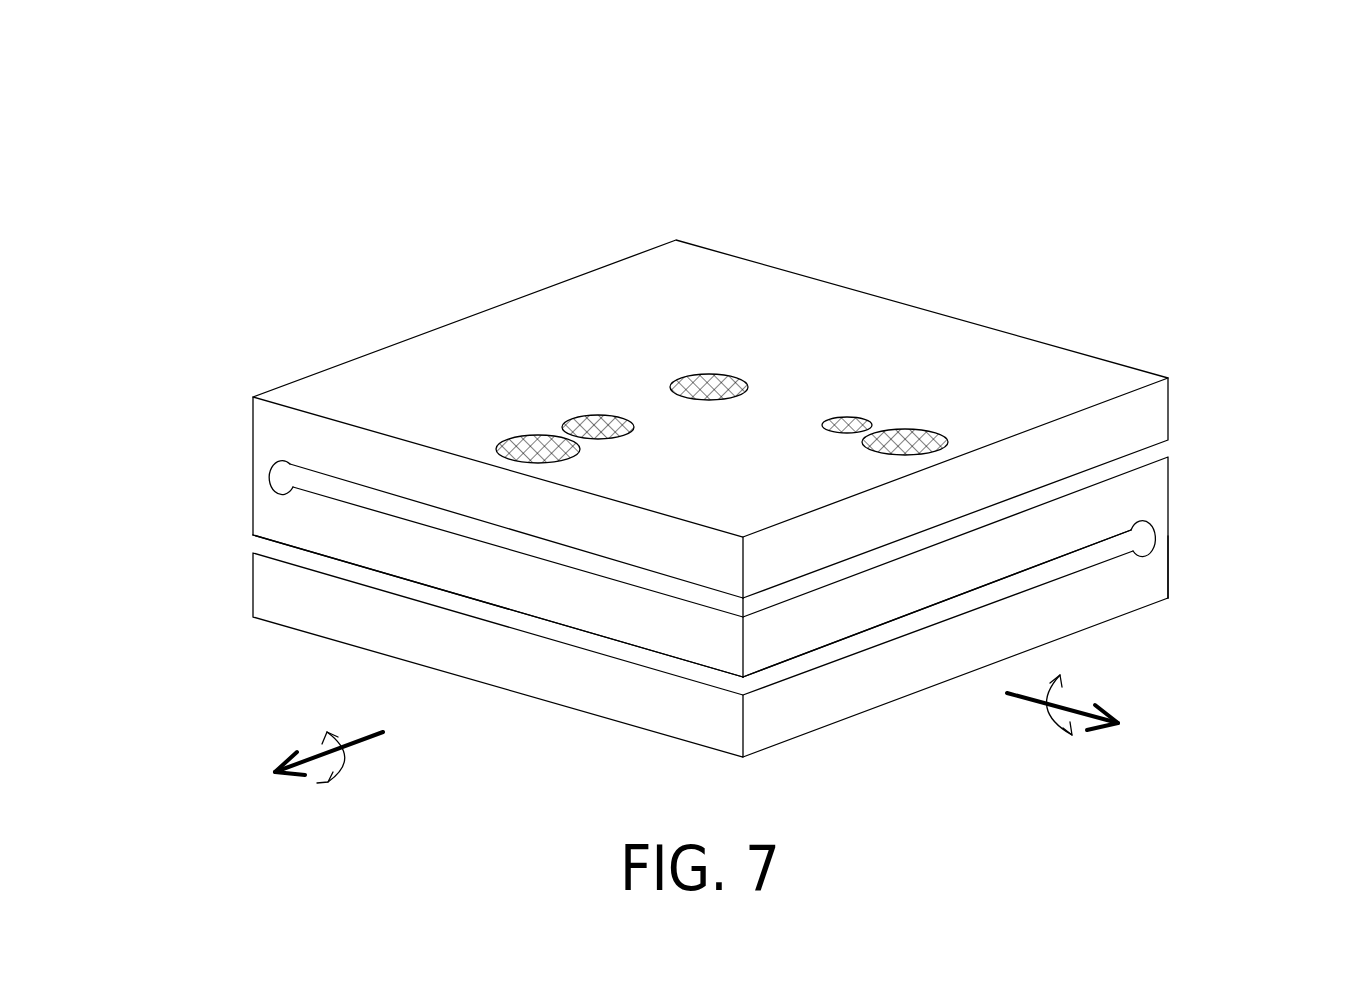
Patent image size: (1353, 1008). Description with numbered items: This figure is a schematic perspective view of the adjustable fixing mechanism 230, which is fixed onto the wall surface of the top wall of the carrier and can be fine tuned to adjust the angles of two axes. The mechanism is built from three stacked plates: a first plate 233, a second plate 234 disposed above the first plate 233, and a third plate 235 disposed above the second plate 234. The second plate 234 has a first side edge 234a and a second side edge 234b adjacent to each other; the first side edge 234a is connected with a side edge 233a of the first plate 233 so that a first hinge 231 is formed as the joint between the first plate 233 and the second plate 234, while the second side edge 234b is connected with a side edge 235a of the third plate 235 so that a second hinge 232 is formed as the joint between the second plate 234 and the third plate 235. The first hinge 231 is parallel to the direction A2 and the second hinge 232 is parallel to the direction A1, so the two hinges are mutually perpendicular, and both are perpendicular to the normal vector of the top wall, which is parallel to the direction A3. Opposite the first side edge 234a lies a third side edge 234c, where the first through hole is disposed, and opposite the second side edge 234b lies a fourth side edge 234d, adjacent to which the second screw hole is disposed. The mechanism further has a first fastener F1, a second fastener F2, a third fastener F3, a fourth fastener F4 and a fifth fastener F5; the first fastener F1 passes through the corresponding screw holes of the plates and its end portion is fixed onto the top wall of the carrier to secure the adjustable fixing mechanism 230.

The adjustable fixing mechanism 230 is at (1270, 768).
The first hinge 231 is at (1163, 533).
The second hinge 232 is at (257, 468).
The first plate 233 is at (280, 613).
The side edge of the first plate 233a is at (1168, 583).
The second plate 234 is at (285, 534).
The first side edge 234a is at (1168, 485).
The second side edge 234b is at (250, 520).
The third side edge 234c is at (487, 578).
The fourth side edge 234d is at (829, 619).
The third plate 235 is at (375, 462).
The side edge of the third plate 235a is at (252, 426).
The first fastener F1 is at (713, 380).
The second fastener F2 is at (523, 443).
The third fastener F3 is at (607, 422).
The fourth fastener F4 is at (913, 432).
The fifth fastener F5 is at (852, 418).
The direction A1 is at (677, 47).
The direction A2 is at (677, 47).
The direction A3 is at (677, 47).